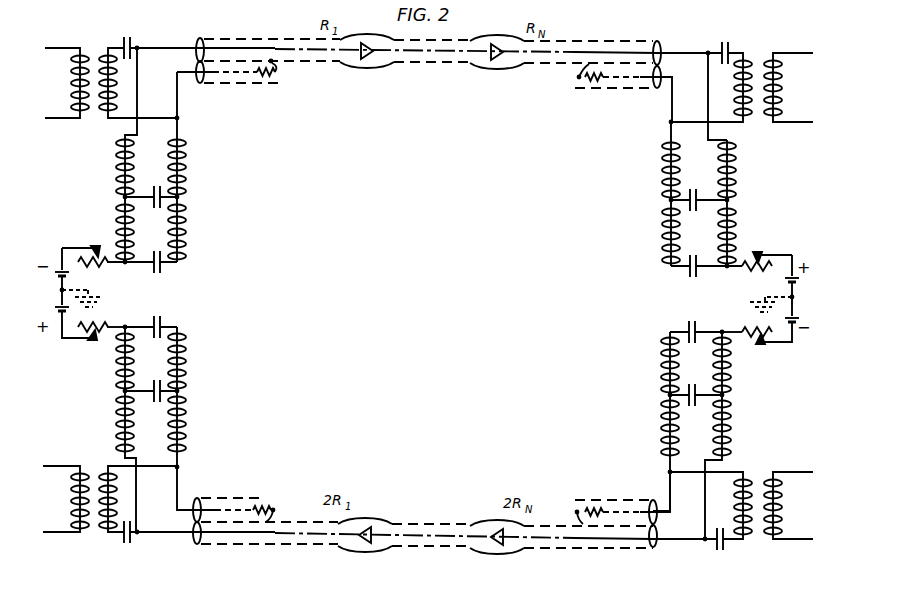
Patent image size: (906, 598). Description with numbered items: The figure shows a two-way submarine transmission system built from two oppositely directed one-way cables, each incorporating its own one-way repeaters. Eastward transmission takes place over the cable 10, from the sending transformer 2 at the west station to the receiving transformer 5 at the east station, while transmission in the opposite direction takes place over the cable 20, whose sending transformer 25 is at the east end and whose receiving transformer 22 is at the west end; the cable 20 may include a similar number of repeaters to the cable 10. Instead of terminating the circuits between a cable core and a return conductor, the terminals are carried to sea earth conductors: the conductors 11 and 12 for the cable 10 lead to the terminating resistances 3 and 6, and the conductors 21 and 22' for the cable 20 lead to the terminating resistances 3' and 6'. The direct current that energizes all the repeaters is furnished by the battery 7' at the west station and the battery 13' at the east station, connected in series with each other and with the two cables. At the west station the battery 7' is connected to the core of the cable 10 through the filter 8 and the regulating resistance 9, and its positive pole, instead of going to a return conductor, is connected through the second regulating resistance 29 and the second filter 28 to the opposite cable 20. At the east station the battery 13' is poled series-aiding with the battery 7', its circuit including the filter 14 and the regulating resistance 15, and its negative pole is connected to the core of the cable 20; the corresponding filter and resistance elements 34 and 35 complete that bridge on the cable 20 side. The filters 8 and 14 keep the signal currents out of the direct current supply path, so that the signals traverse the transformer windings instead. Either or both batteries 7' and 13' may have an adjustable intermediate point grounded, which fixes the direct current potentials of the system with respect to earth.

The sending transformer 2 is at (93, 52).
The cable 10 is at (208, 42).
The sea earth conductor 11 is at (214, 84).
The terminating resistance 3 is at (267, 85).
The receiving transformer 5 is at (760, 58).
The terminating resistance 6 is at (588, 89).
The sea earth conductor 12 is at (613, 88).
The filter 8 is at (122, 197).
The regulating resistance 9 is at (96, 264).
The battery 7' is at (69, 294).
The second regulating resistance 29 is at (102, 326).
The second filter 28 is at (122, 391).
The receiving transformer 22 is at (110, 515).
The sea earth conductor 21 is at (212, 498).
The terminating resistance 3' is at (266, 495).
The cable 20 is at (226, 545).
The terminating resistance 6' is at (583, 497).
The sea earth conductor 22' is at (636, 491).
The sending transformer 25 is at (758, 540).
The filter 14 is at (731, 200).
The regulating resistance 15 is at (746, 274).
The battery 13' is at (785, 299).
The potentiometer 35 is at (746, 330).
The inductance coil 34 is at (729, 397).